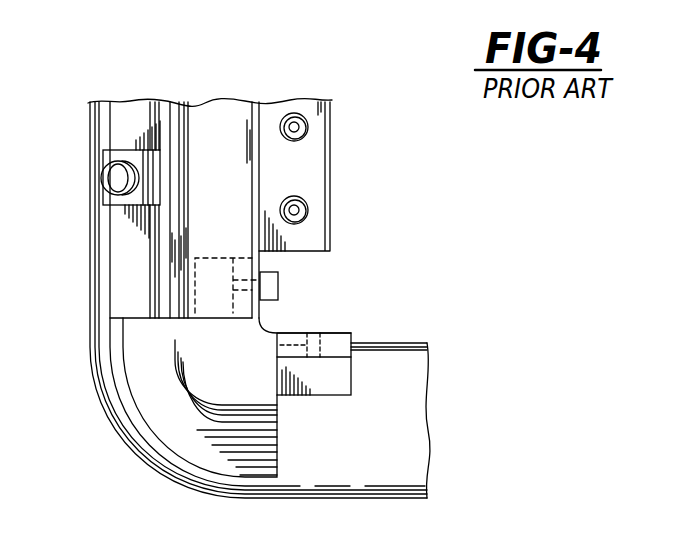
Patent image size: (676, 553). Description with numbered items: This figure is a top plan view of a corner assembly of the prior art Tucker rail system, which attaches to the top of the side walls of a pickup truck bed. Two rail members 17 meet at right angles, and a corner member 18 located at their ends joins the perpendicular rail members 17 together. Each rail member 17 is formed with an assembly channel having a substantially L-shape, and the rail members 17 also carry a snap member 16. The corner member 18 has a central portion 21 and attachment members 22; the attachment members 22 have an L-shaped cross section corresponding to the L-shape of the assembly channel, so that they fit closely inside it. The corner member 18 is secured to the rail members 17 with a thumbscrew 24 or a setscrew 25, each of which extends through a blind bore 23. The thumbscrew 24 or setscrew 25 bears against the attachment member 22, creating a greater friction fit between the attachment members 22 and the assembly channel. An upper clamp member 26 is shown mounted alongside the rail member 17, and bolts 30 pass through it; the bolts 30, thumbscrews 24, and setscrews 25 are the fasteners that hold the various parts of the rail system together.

The snap member 16 is at (119, 132).
The rail member 17 is at (128, 307).
The corner member 18 is at (87, 399).
The central portion 21 is at (205, 388).
The attachment member 22 is at (219, 258).
The blind bore 23 is at (305, 347).
The thumbscrew 24 is at (278, 287).
The setscrew 25 is at (318, 335).
The upper clamp member 26 is at (322, 170).
The bolt 30 is at (308, 132).